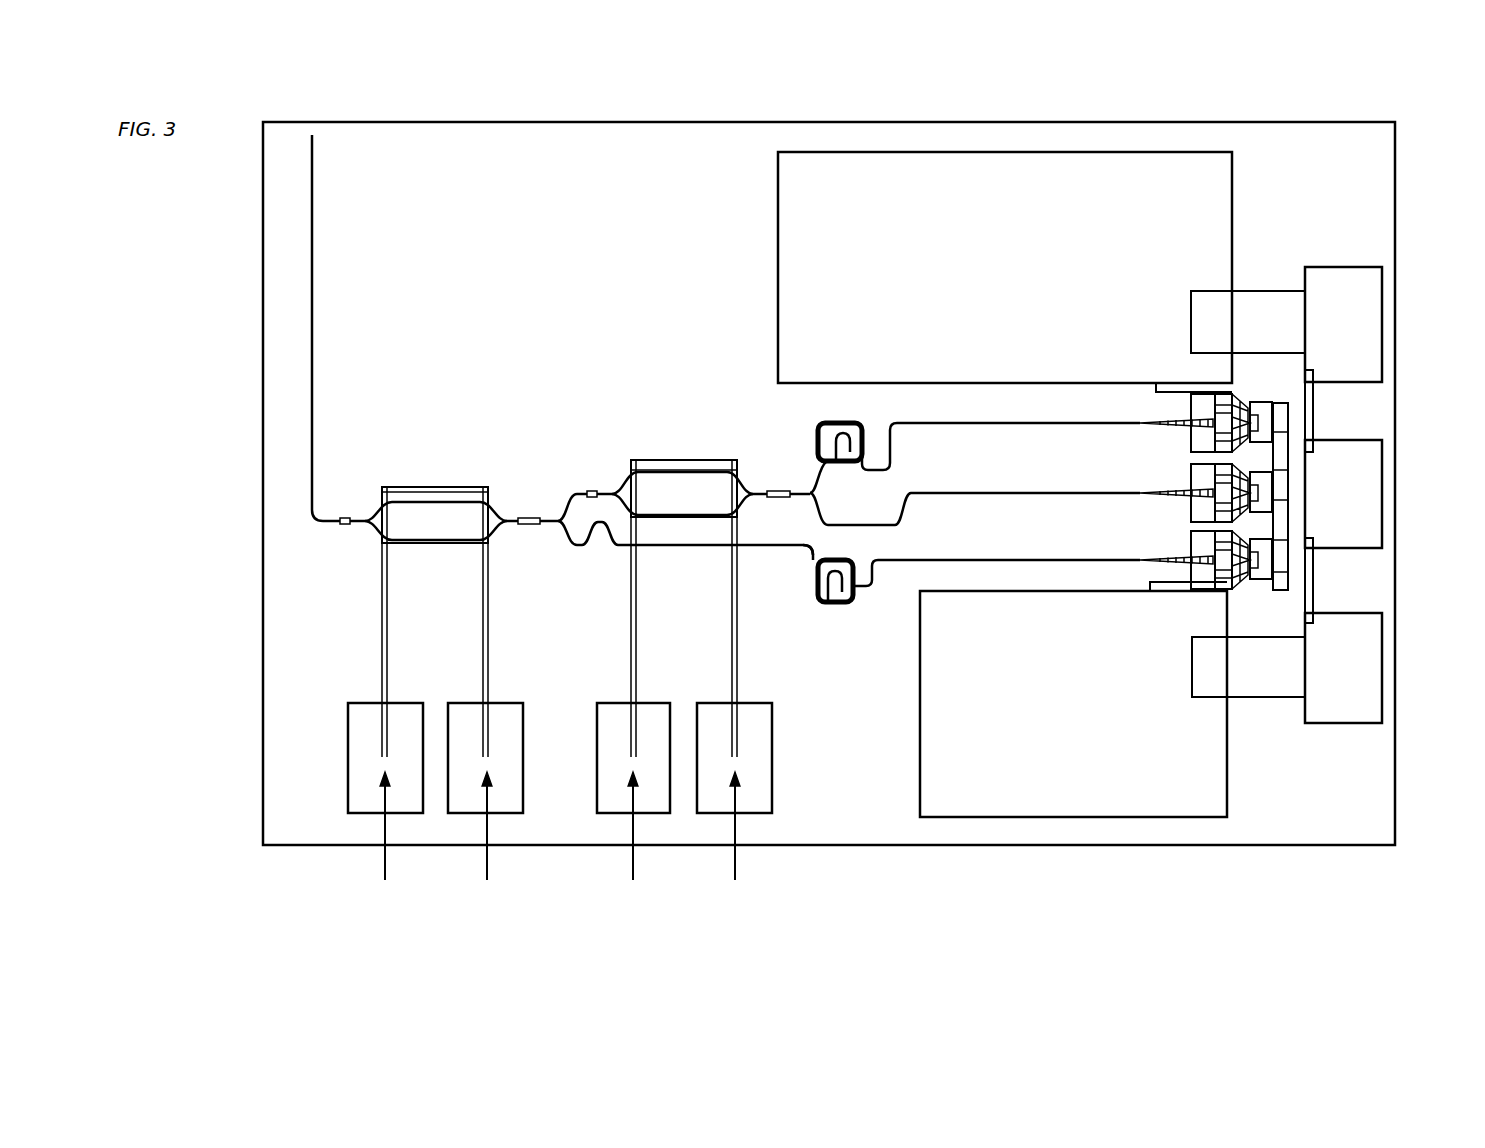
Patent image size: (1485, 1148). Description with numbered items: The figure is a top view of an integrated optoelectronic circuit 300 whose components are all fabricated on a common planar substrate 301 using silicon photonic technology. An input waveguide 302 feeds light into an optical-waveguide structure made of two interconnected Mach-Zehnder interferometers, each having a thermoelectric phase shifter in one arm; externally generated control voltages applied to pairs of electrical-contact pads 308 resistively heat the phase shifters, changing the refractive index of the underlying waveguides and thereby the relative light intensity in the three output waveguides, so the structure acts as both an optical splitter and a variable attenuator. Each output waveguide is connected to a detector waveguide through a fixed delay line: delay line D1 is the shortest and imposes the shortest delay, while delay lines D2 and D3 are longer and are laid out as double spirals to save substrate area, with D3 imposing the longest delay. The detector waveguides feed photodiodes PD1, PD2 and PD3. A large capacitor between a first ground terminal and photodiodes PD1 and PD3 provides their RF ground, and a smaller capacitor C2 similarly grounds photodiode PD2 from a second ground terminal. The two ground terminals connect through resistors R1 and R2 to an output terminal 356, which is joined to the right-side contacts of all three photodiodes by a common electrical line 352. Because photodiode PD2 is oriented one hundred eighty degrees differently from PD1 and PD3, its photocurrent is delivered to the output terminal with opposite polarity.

The integrated optoelectronic circuit 300 is at (194, 176).
The planar substrate 301 is at (436, 122).
The input waveguide 302 is at (312, 245).
The electrical-contact pads 308 is at (403, 703).
The common electrical line 352 is at (1280, 404).
The output terminal 356 is at (1382, 452).
The fixed delay line D1 is at (880, 525).
The fixed delay line D2 is at (835, 602).
The fixed delay line D3 is at (847, 423).
The photodiode PD1 is at (1203, 500).
The photodiode PD2 is at (1232, 584).
The photodiode PD3 is at (1203, 432).
The capacitor C2 is at (920, 757).
The resistor R1 is at (1313, 412).
The resistor R2 is at (1313, 580).